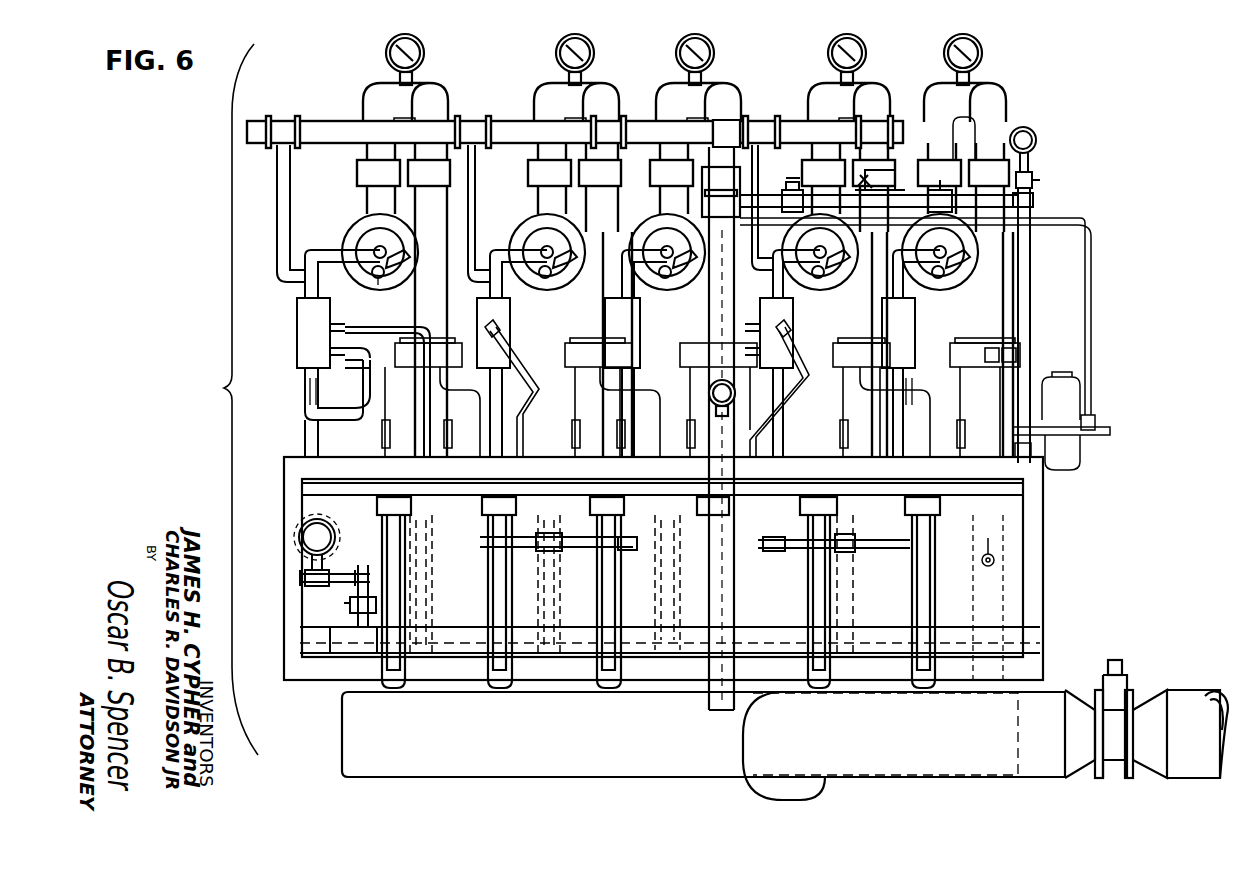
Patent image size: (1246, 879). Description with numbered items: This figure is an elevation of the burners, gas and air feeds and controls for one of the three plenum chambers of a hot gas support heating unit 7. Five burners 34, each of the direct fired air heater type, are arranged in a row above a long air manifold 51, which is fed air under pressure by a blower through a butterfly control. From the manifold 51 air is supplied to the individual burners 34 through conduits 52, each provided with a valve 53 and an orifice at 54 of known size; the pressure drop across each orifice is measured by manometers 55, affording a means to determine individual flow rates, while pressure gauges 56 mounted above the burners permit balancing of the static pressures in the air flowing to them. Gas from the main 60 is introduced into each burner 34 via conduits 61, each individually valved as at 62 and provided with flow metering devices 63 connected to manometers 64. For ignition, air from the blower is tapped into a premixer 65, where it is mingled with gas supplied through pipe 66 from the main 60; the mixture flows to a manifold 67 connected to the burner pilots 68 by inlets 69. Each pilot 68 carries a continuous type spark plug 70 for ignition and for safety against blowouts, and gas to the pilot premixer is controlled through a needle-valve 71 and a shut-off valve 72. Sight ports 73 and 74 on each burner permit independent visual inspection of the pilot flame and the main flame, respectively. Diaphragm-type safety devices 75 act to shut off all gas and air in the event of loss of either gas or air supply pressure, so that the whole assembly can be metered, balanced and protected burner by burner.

The hot gas support heating unit 7 is at (227, 399).
The burner 34 is at (420, 235).
The manifold 51 is at (342, 738).
The conduit 52 is at (730, 110).
The valve 53 is at (995, 555).
The orifice 54 is at (990, 356).
The manometer 55 is at (548, 573).
The pressure gauge 56 is at (425, 46).
The main 60 is at (645, 643).
The conduit 61 is at (305, 410).
The valve 62 is at (308, 388).
The flow metering device 63 is at (330, 326).
The manometer 64 is at (825, 688).
The premixer 65 is at (736, 240).
The pipe 66 is at (1092, 253).
The manifold 67 is at (497, 122).
The burner pilot 68 is at (372, 275).
The inlet 69 is at (303, 282).
The spark plug 70 is at (410, 262).
The needle-valve 71 is at (790, 186).
The shut-off valve 72 is at (935, 188).
The sight port 73 is at (372, 246).
The sight port 74 is at (380, 282).
The diaphragm-type safety device 75 is at (310, 535).